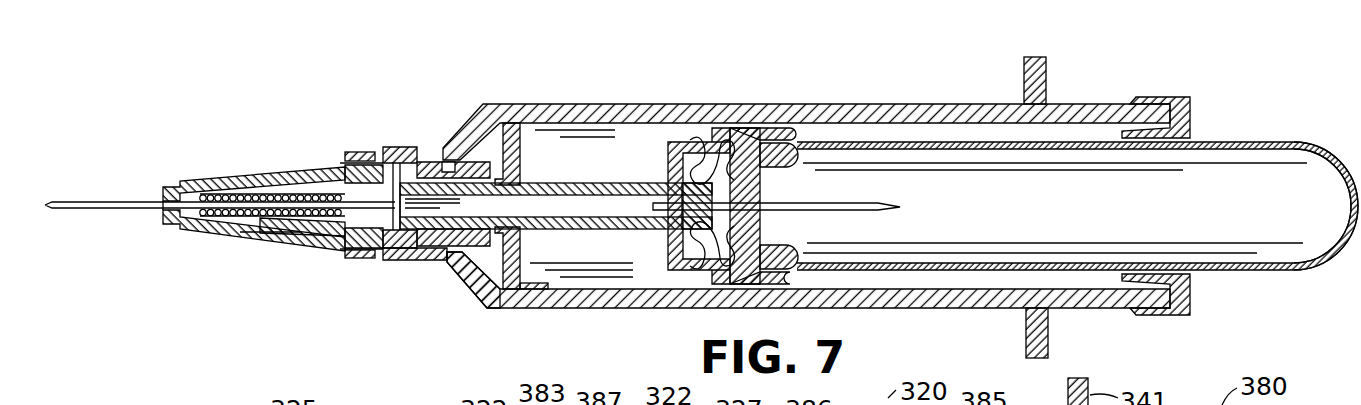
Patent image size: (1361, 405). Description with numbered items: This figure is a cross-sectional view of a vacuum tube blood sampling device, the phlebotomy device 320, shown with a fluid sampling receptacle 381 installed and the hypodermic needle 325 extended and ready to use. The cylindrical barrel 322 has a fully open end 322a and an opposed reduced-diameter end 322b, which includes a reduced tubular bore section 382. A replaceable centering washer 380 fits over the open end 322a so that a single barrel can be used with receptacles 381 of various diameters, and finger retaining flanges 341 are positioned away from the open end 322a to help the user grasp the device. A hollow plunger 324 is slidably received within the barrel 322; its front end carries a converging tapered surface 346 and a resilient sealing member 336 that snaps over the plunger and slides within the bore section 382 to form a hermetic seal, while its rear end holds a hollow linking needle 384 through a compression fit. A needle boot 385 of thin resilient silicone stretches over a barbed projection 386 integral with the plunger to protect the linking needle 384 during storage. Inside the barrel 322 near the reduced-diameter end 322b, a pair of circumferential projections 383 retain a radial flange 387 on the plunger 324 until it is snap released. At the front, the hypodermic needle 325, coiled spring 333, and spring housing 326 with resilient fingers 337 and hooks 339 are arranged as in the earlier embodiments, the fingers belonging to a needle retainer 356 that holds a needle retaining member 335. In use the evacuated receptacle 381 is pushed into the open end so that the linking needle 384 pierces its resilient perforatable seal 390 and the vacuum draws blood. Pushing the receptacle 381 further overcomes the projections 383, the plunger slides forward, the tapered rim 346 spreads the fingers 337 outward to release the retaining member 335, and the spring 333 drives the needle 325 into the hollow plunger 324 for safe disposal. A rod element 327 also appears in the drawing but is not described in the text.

The phlebotomy device 320 is at (821, 93).
The barrel 322 is at (693, 97).
The open end 322a is at (1130, 98).
The reduced-diameter end 322b is at (333, 258).
The hollow plunger 324 is at (602, 238).
The hypodermic needle 325 is at (115, 200).
The spring housing 326 is at (242, 164).
The needle carrier rod 327 is at (652, 233).
The coiled spring 333 is at (246, 224).
The needle retaining member 335 is at (334, 168).
The resilient sealing member 336 is at (477, 293).
The resilient fingers 337 is at (296, 228).
The hooks 339 is at (384, 157).
The finger retaining flanges 341 is at (1042, 56).
The converging tapered surface 346 is at (432, 252).
The needle retainer 356 is at (267, 240).
The centering washer 380 is at (1190, 124).
The fluid sampling receptacle 381 is at (1278, 141).
The reduced tubular bore section 382 is at (443, 150).
The circumferential projections 383 is at (533, 288).
The hollow linking needle 384 is at (855, 212).
The needle boot 385 is at (760, 122).
The barbed projection 386 is at (729, 130).
The radial flange 387 is at (523, 167).
The resilient perforatable seal 390 is at (793, 132).